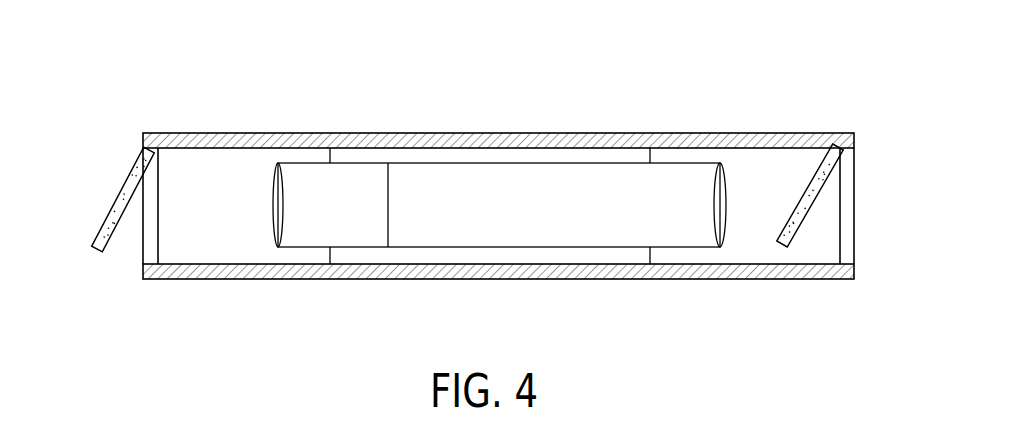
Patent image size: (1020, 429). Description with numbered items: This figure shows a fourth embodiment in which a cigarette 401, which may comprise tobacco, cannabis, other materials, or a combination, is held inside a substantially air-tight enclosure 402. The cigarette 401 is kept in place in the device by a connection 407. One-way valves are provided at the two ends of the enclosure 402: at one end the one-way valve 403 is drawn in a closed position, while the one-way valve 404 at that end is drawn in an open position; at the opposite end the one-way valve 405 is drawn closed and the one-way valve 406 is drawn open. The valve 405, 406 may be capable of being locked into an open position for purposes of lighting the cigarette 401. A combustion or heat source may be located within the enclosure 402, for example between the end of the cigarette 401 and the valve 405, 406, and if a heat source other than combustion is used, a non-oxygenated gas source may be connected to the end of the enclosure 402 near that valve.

The cigarette 401 is at (568, 188).
The substantially air-tight enclosure 402 is at (773, 132).
The one-way valve in a closed position 403 is at (152, 247).
The one-way valve in an open position 404 is at (132, 190).
The one-way valve in a closed position 405 is at (852, 230).
The one-way valve in an open position 406 is at (827, 182).
The connection 407 is at (333, 157).